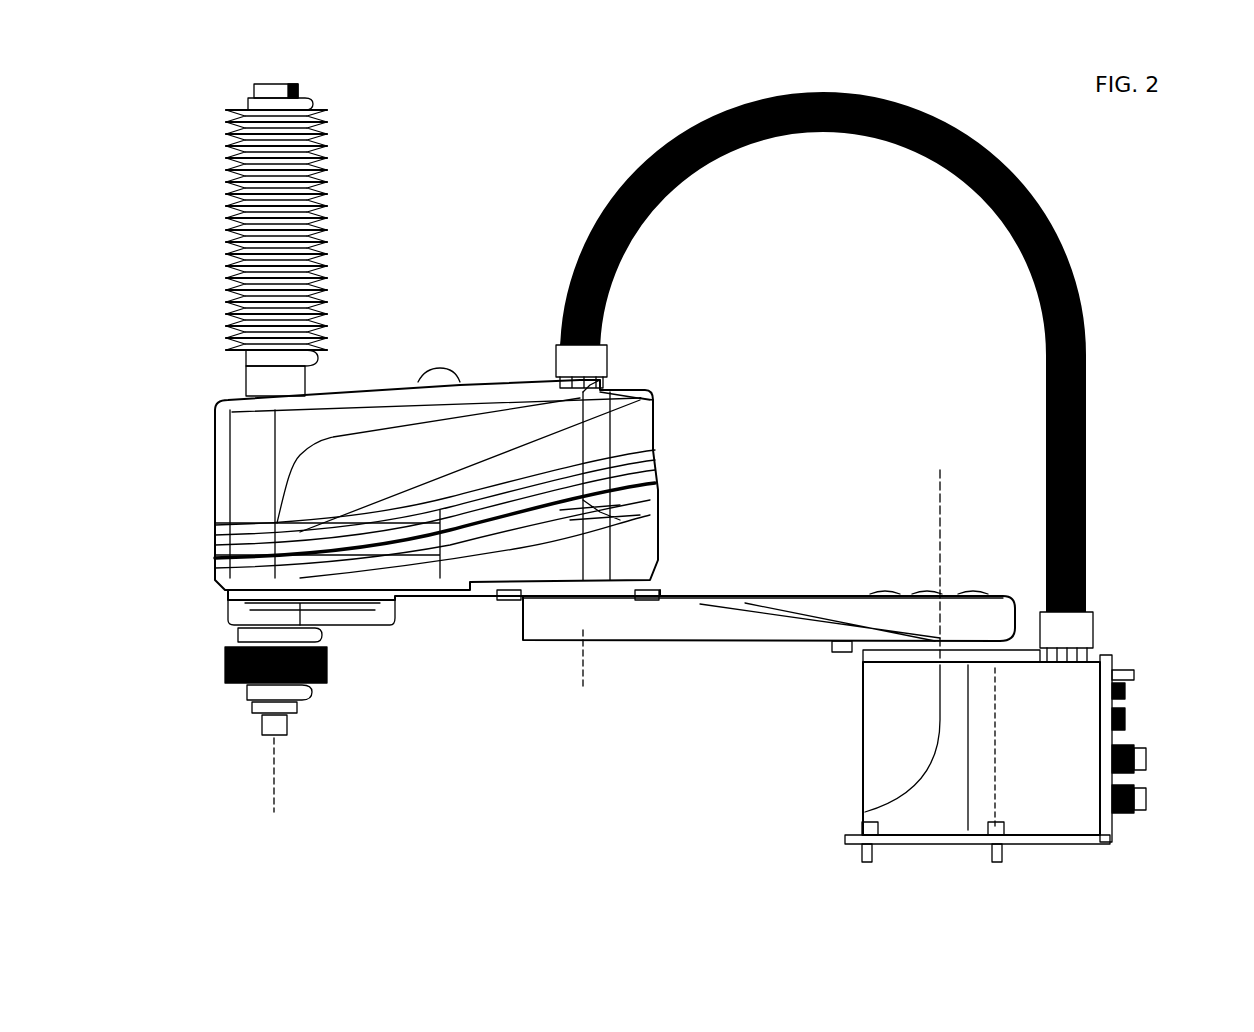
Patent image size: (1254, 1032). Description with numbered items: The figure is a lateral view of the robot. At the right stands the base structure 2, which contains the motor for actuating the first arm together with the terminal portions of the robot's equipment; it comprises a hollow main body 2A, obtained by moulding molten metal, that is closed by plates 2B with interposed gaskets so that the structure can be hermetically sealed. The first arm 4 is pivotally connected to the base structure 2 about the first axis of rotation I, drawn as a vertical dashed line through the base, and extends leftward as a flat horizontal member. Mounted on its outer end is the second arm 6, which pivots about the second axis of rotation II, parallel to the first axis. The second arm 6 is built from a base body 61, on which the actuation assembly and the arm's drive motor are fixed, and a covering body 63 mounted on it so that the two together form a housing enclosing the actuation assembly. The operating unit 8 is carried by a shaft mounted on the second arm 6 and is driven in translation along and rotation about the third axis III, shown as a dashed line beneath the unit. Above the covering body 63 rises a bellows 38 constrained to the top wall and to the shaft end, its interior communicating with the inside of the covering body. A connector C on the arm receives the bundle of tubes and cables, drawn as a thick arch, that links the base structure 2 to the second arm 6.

The bellows 38 is at (316, 192).
The connector C is at (612, 355).
The second arm 6 is at (682, 472).
The covering body 63 is at (646, 415).
The base body 61 is at (648, 550).
The operating unit 8 is at (305, 707).
The first arm 4 is at (682, 650).
The base structure 2 is at (1000, 766).
The hollow main body 2A is at (875, 729).
The plates 2B is at (1118, 737).
The first axis of rotation I is at (940, 508).
The second axis of rotation II is at (560, 716).
The third axis III is at (274, 788).